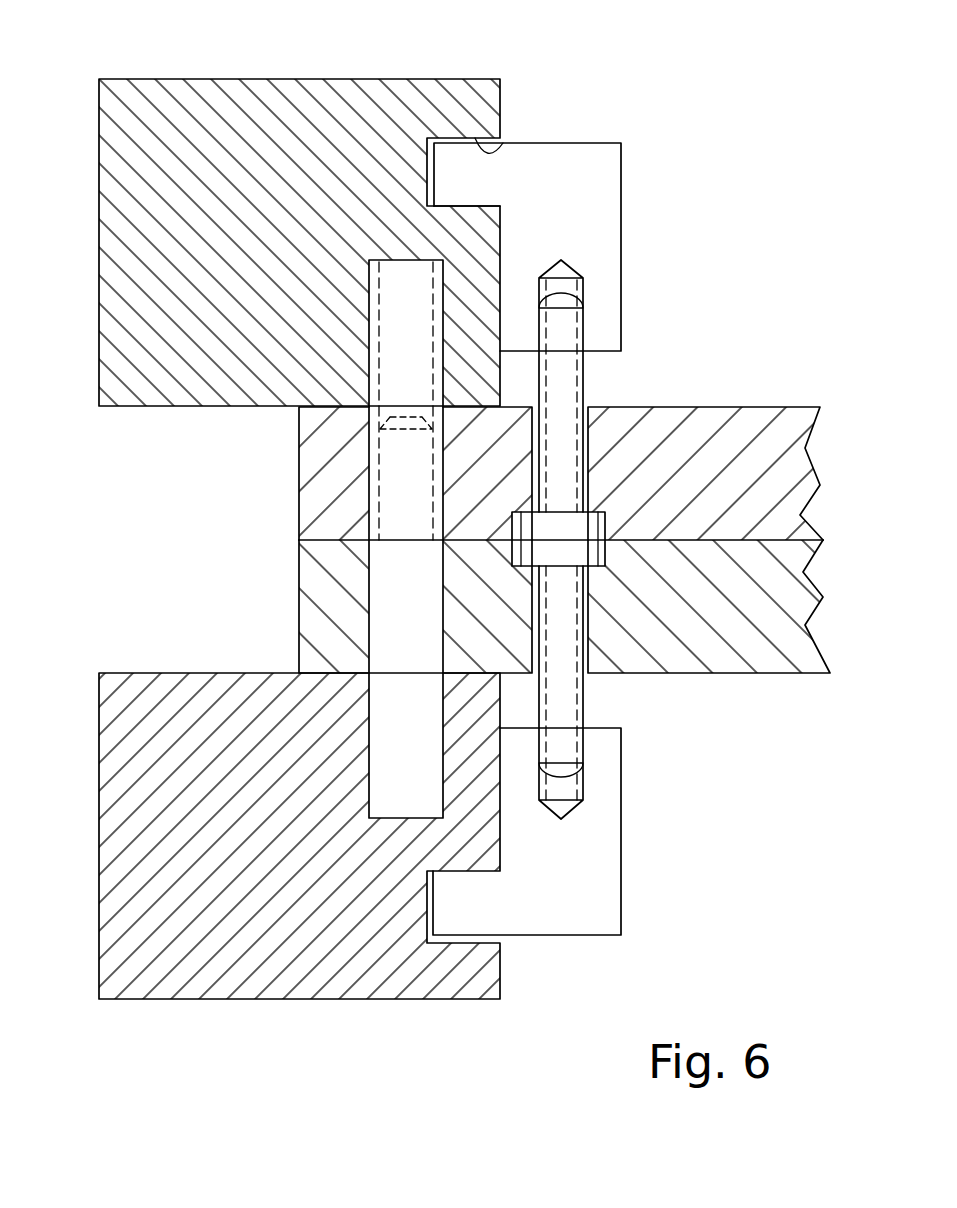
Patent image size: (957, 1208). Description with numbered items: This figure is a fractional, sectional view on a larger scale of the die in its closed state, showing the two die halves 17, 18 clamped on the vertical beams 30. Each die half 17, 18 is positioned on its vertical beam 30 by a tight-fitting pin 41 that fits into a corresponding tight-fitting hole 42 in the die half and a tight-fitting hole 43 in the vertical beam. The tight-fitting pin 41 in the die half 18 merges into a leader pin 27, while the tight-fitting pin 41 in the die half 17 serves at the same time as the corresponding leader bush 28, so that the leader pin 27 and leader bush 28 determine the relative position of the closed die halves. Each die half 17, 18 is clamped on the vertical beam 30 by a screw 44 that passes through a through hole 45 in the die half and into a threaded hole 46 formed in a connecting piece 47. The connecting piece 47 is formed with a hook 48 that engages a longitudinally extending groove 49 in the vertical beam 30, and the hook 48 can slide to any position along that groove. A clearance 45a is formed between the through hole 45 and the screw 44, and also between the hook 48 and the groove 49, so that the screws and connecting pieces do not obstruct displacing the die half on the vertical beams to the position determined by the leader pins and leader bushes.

The die half 17 is at (798, 420).
The die half 18 is at (810, 650).
The leader pin 27 is at (392, 482).
The leader bush 28 is at (373, 527).
The vertical beam 30 is at (197, 91).
The tight-fitting pin 41 is at (373, 428).
The tight-fitting hole 42 is at (440, 316).
The tight-fitting hole 43 is at (383, 336).
The screw 44 is at (572, 748).
The through hole 45 is at (572, 612).
The clearance 45a is at (590, 672).
The threaded hole 46 is at (566, 790).
The connecting piece 47 is at (605, 257).
The hook 48 is at (467, 188).
The longitudinally extending groove 49 is at (502, 142).